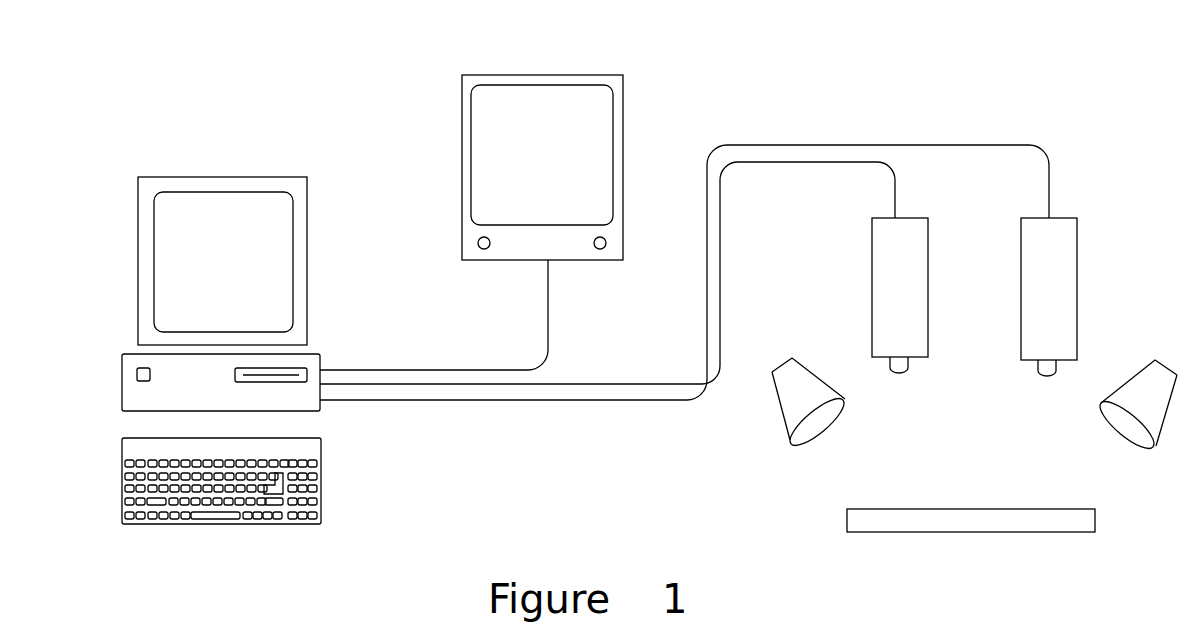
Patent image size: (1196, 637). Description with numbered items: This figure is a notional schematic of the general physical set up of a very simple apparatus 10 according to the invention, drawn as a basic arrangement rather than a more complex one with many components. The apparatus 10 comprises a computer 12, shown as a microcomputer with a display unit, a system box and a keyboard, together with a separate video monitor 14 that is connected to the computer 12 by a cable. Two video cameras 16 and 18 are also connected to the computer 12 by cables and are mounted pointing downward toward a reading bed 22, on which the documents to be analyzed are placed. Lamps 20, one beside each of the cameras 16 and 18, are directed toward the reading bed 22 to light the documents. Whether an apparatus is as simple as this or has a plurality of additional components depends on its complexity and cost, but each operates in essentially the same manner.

The apparatus 10 is at (541, 470).
The computer 12 is at (114, 393).
The video monitor 14 is at (552, 78).
The video camera 16 is at (878, 280).
The video camera 18 is at (1070, 308).
The lamps 20 is at (825, 427).
The reading bed 22 is at (1092, 520).